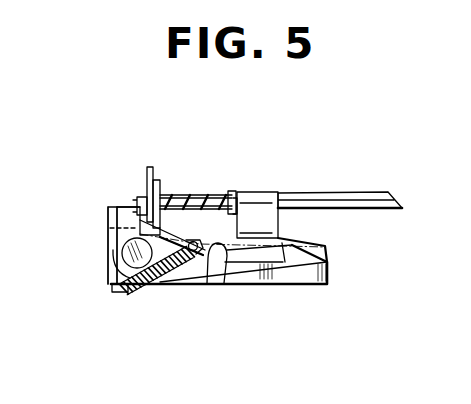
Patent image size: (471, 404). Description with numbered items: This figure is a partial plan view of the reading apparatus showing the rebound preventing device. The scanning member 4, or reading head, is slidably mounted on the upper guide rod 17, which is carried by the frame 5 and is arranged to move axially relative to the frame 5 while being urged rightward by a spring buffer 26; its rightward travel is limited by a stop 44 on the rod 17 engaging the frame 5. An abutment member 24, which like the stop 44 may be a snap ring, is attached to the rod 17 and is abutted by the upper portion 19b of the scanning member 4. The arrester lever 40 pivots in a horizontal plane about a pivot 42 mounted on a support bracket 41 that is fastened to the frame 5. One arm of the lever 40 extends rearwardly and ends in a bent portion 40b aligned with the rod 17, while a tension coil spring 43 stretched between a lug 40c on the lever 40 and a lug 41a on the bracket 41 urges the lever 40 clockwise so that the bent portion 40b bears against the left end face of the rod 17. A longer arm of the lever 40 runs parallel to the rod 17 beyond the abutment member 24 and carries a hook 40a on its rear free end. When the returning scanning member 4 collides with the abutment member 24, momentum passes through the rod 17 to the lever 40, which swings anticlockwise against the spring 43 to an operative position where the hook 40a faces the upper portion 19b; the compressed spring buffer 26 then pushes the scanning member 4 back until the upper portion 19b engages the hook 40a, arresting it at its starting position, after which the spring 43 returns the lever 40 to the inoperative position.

The scanning member 4 is at (259, 192).
The frame 5 is at (150, 167).
The upper guide rod 17 is at (362, 193).
The upper portion of the running body 19b is at (272, 192).
The abutment member 24 is at (232, 191).
The spring buffer 26 is at (199, 193).
The arrester lever 40 is at (288, 278).
The hook 40a is at (300, 247).
The bent portion 40b is at (119, 206).
The lug 40c is at (218, 283).
The support bracket 41 is at (112, 284).
The lug 41a is at (115, 294).
The pivot 42 is at (122, 250).
The tension coil spring 43 is at (157, 286).
The stop 44 is at (143, 198).